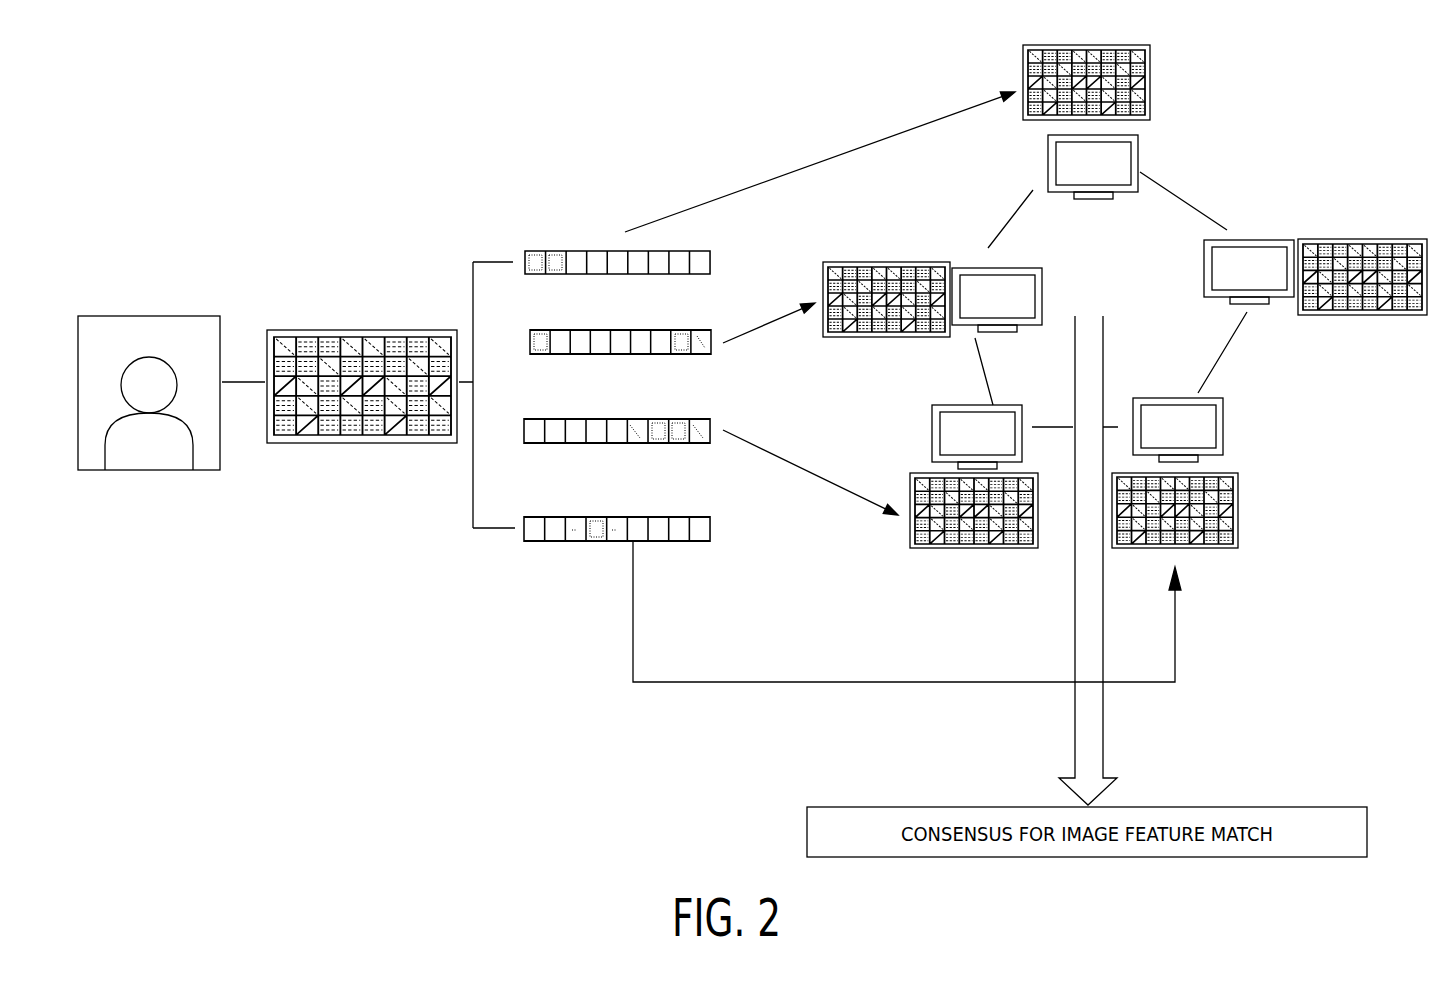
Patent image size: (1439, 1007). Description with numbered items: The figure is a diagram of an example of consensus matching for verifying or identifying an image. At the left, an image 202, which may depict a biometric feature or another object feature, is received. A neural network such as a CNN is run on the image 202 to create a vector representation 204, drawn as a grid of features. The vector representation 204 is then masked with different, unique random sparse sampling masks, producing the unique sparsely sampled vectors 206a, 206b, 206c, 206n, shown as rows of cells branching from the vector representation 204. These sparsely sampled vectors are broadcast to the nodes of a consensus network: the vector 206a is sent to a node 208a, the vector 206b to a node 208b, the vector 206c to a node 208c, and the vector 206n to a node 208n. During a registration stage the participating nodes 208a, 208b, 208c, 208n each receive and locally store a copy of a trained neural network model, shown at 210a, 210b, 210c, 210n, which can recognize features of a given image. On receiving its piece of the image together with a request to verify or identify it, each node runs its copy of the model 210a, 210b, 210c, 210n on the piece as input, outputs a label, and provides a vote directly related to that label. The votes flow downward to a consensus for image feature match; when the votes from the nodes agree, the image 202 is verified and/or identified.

The image 202 is at (139, 316).
The vector representation 204 is at (363, 330).
The unique sparsely sampled vector 206a is at (573, 252).
The unique sparsely sampled vector 206b is at (538, 330).
The unique sparsely sampled vector 206c is at (538, 419).
The unique sparsely sampled vector 206n is at (540, 517).
The node 208a is at (1125, 162).
The node 208b is at (1027, 296).
The node 208c is at (935, 438).
The node 208n is at (1220, 430).
The trained neural network model 210a is at (1150, 65).
The trained neural network model 210b is at (935, 262).
The trained neural network model 210c is at (973, 548).
The trained neural network model 210n is at (1240, 515).